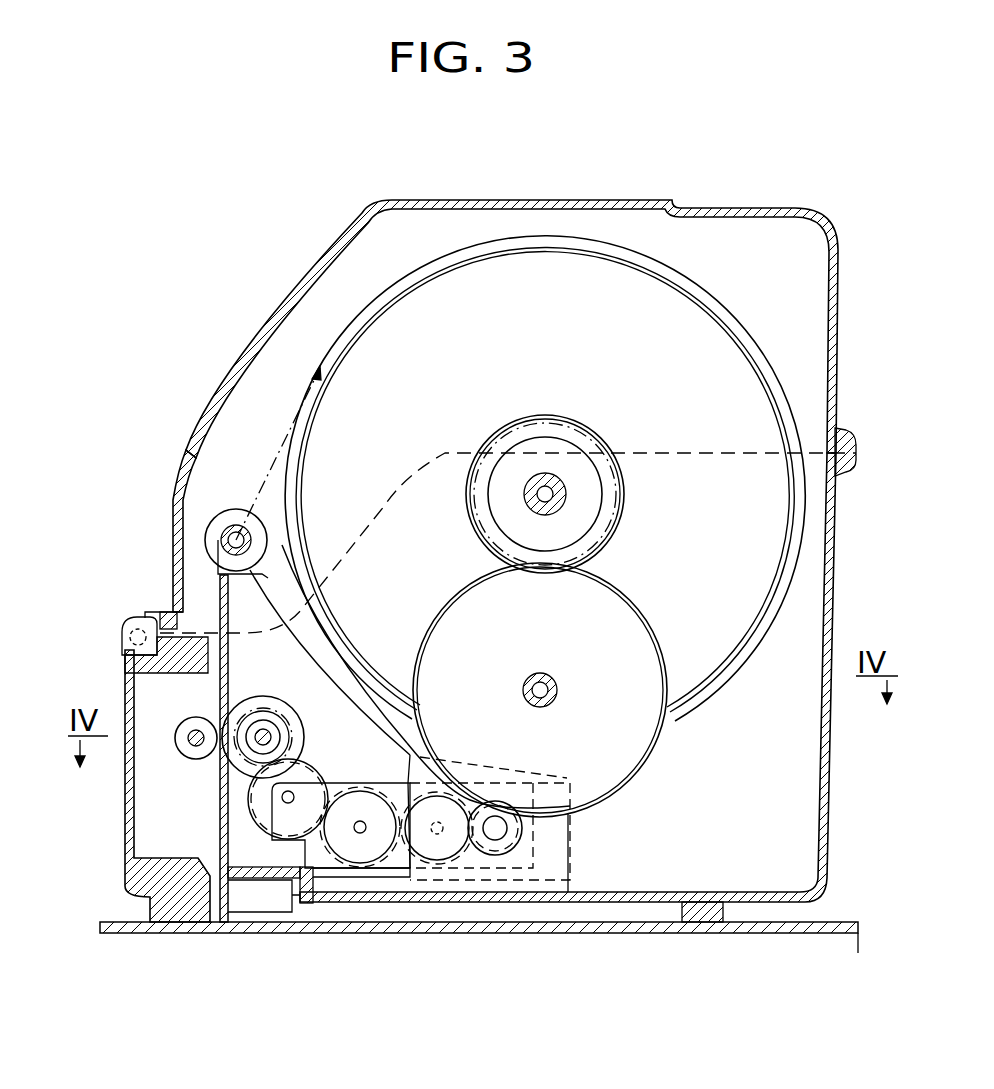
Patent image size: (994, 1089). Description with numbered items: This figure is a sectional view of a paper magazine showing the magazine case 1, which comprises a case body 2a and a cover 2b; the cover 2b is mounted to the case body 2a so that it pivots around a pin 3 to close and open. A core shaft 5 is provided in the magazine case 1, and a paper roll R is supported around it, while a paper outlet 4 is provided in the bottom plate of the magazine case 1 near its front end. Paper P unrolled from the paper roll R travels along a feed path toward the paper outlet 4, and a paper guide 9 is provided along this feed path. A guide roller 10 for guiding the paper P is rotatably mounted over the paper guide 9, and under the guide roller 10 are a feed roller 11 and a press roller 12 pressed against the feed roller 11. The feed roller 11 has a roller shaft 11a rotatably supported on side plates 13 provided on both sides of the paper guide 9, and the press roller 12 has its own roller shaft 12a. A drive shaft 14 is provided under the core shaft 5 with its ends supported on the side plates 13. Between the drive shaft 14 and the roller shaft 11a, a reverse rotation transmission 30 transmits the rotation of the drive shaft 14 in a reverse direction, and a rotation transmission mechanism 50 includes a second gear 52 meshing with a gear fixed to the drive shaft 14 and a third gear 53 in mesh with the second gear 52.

The magazine case 1 is at (515, 528).
The cover 2b is at (495, 200).
The case body 2a is at (826, 795).
The paper roll R is at (602, 237).
The paper P is at (263, 460).
The pin 3 is at (125, 618).
The paper outlet 4 is at (220, 925).
The core shaft 5 is at (550, 488).
The paper guide 9 is at (218, 575).
The guide roller 10 is at (212, 520).
The feed roller 11 is at (290, 707).
The roller shaft 11a is at (270, 735).
The press roller 12 is at (187, 733).
The roller shaft 12a is at (193, 743).
The side plates 13 is at (267, 610).
The drive shaft 14 is at (494, 842).
The reverse rotation transmission 30 is at (305, 840).
The rotation transmission mechanism 50 is at (577, 677).
The second gear 52 is at (640, 637).
The third gear 53 is at (617, 500).